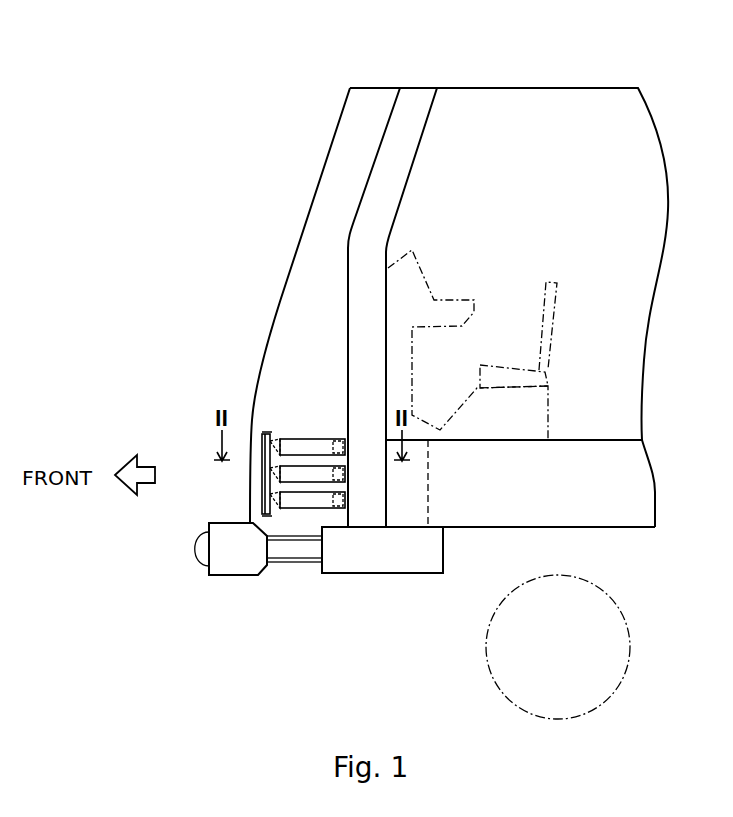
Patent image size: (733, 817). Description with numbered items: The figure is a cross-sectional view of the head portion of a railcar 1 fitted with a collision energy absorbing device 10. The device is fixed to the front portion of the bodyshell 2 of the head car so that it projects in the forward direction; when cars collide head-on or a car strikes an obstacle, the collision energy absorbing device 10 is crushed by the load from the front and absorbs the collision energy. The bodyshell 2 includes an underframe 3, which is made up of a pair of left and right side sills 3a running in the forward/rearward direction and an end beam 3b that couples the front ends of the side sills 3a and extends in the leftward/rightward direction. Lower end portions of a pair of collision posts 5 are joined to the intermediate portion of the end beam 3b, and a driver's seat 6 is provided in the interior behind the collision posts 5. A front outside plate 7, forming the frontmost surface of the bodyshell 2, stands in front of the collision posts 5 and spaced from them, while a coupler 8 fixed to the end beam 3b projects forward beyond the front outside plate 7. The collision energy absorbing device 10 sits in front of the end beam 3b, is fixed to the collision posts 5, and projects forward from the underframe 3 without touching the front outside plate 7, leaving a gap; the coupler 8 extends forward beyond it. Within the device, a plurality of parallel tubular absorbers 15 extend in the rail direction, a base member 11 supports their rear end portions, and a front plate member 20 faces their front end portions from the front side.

The railcar 1 is at (210, 92).
The bodyshell 2 is at (488, 88).
The underframe 3 is at (625, 510).
The side sills 3a is at (478, 512).
The end beam 3b is at (400, 510).
The collision posts 5 is at (355, 220).
The driver's seat 6 is at (530, 268).
The front outside plate 7 is at (295, 257).
The coupler 8 is at (227, 565).
The collision energy absorbing device 10 is at (286, 409).
The base member 11 is at (348, 433).
The tubular absorbers 15 is at (315, 437).
The front plate member 20 is at (262, 475).